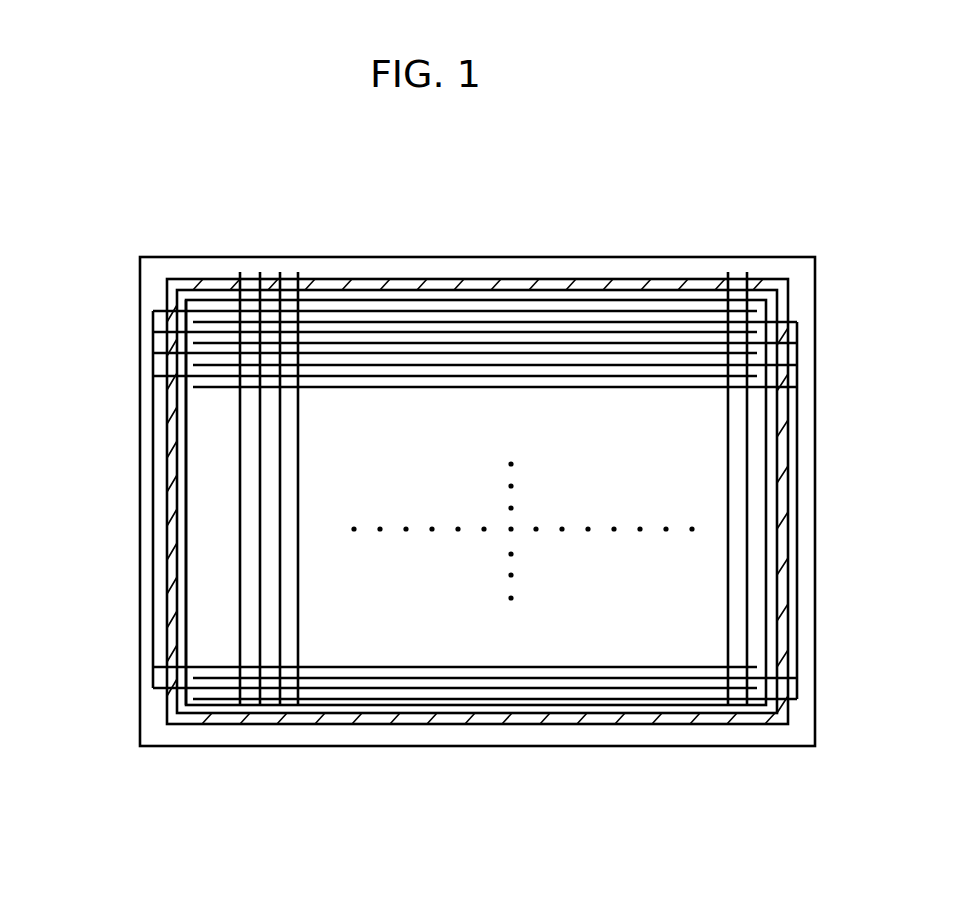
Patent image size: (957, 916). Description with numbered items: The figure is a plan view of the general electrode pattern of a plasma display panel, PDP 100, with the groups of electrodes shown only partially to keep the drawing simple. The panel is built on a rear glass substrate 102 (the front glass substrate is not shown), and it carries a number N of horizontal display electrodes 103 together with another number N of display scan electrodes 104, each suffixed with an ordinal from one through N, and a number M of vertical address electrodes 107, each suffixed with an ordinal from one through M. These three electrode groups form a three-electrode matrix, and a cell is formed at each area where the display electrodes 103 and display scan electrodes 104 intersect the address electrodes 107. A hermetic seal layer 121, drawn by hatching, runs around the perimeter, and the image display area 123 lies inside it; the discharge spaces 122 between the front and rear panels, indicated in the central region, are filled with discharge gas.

The PDP 100 is at (815, 528).
The rear glass substrate 102 is at (777, 257).
The display electrode 103 is at (207, 388).
The display scan electrode 104 is at (425, 484).
The address electrode 107 is at (462, 436).
The hermetic seal layer 121 is at (462, 287).
The discharge space 122 is at (562, 417).
The image display area 123 is at (187, 515).